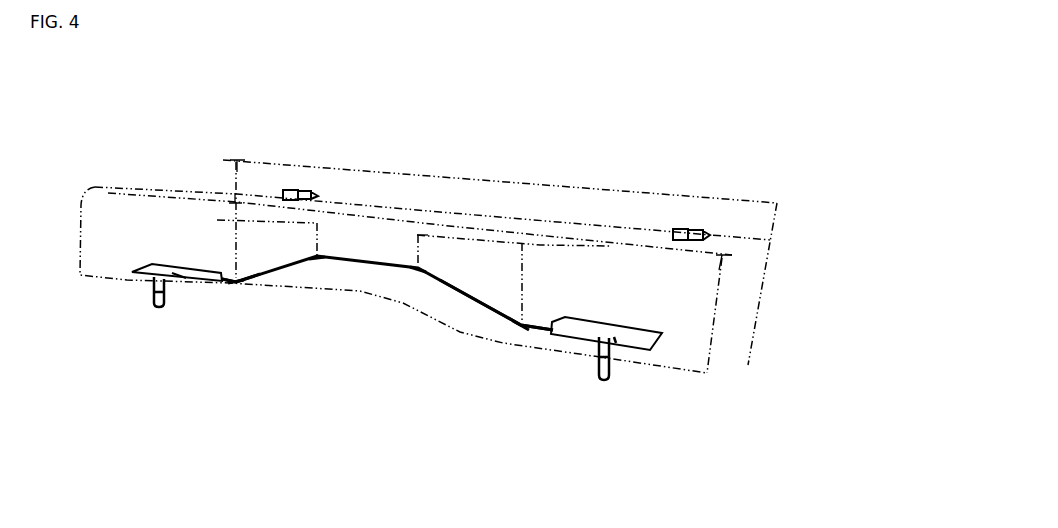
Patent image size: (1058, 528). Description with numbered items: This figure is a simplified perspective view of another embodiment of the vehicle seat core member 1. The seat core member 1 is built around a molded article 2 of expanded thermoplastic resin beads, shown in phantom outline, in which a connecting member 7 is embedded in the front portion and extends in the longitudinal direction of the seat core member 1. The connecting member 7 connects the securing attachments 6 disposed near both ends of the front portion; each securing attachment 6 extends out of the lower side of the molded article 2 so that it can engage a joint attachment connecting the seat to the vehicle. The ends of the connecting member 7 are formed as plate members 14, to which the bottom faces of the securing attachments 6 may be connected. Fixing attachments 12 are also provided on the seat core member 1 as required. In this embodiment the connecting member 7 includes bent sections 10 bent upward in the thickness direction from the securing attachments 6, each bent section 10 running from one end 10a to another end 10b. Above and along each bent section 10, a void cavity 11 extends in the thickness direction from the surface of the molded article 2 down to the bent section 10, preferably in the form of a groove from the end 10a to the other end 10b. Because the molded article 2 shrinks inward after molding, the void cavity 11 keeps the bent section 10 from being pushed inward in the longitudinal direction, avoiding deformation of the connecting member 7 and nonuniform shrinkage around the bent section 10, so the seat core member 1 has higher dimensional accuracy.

The vehicle seat core member 1 is at (506, 161).
The molded article 2 is at (753, 285).
The securing attachment 6 is at (152, 292).
The connecting member 7 is at (358, 266).
The bent section 10 is at (280, 273).
The end of bent section 10a is at (236, 282).
The another end of bent section 10b is at (317, 257).
The void cavity 11 is at (270, 221).
The fixing attachment 12 is at (290, 189).
The plate member 14 is at (177, 282).